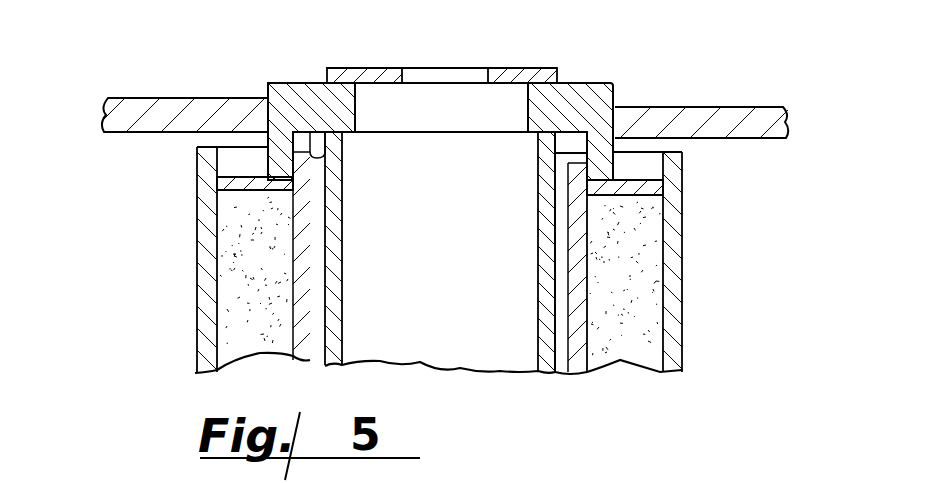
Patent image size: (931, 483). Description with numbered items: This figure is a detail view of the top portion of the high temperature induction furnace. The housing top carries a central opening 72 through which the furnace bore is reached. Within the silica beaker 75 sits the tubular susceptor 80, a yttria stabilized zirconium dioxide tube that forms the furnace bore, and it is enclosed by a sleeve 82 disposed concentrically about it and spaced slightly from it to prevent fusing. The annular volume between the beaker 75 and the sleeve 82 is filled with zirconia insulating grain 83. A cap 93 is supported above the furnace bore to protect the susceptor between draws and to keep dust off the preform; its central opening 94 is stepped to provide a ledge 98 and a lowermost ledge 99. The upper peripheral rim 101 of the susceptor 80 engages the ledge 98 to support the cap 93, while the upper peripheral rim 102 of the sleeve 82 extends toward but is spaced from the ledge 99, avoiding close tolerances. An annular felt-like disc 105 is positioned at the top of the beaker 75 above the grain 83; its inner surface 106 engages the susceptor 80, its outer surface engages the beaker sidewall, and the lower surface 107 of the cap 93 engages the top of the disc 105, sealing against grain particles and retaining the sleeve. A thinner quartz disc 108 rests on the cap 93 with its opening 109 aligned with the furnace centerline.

The central opening 72 is at (274, 108).
The ledge 99 is at (313, 155).
The disc 108 is at (373, 72).
The opening 94 is at (410, 105).
The opening 109 is at (485, 74).
The upper peripheral rim 101 is at (549, 150).
The upper peripheral rim 102 is at (578, 162).
The cap 93 is at (615, 93).
The ledge 98 is at (342, 162).
The inner surface 106 is at (293, 187).
The zirconia insulating grain 83 is at (237, 273).
The lower surface 107 is at (590, 207).
The tubular susceptor 80 is at (538, 308).
The annular felt-like disc 105 is at (640, 188).
The sleeve 82 is at (587, 310).
The silica beaker 75 is at (682, 343).